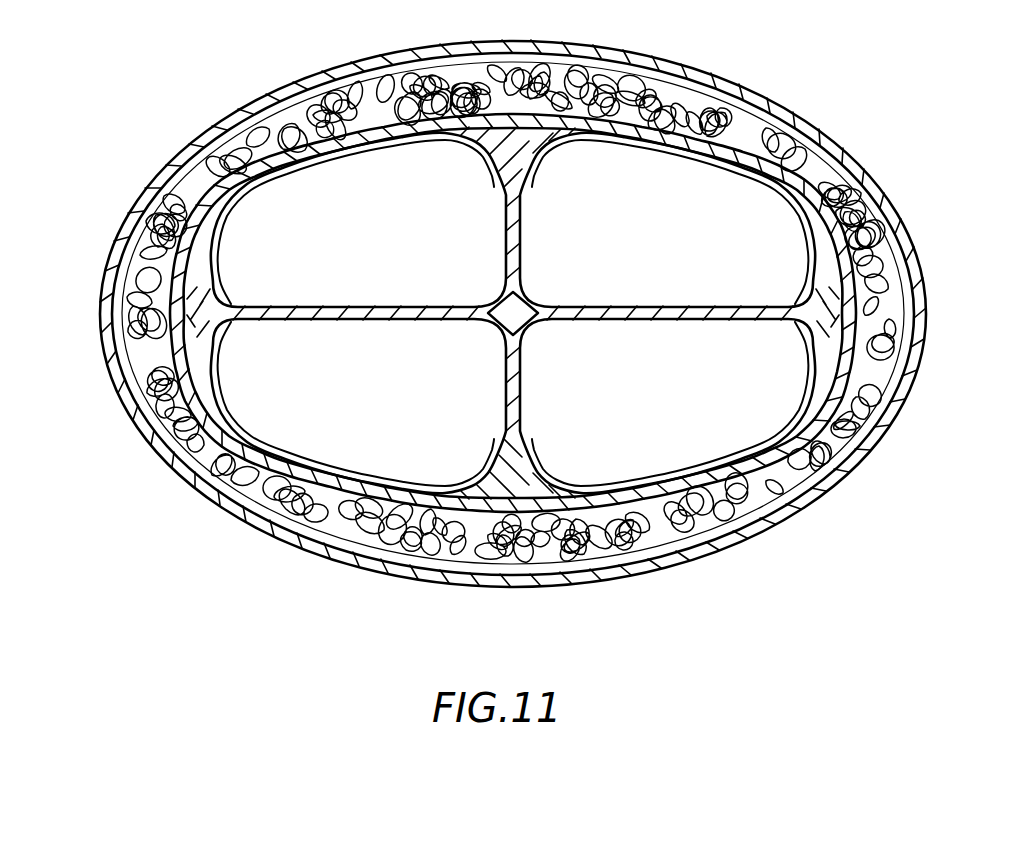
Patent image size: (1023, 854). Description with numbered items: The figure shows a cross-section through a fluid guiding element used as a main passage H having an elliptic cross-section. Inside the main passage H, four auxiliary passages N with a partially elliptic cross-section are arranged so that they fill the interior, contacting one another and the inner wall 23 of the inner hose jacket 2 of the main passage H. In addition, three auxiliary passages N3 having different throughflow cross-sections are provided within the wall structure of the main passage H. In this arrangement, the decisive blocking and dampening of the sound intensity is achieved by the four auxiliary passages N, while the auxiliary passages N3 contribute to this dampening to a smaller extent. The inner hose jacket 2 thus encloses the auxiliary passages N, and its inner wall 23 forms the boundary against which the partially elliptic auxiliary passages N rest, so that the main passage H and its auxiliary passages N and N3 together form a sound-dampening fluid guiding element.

The main passage H is at (532, 336).
The inner hose jacket 2 is at (700, 96).
The auxiliary passages N3 is at (200, 212).
The inner wall 23 is at (483, 140).
The auxiliary passage N is at (245, 283).